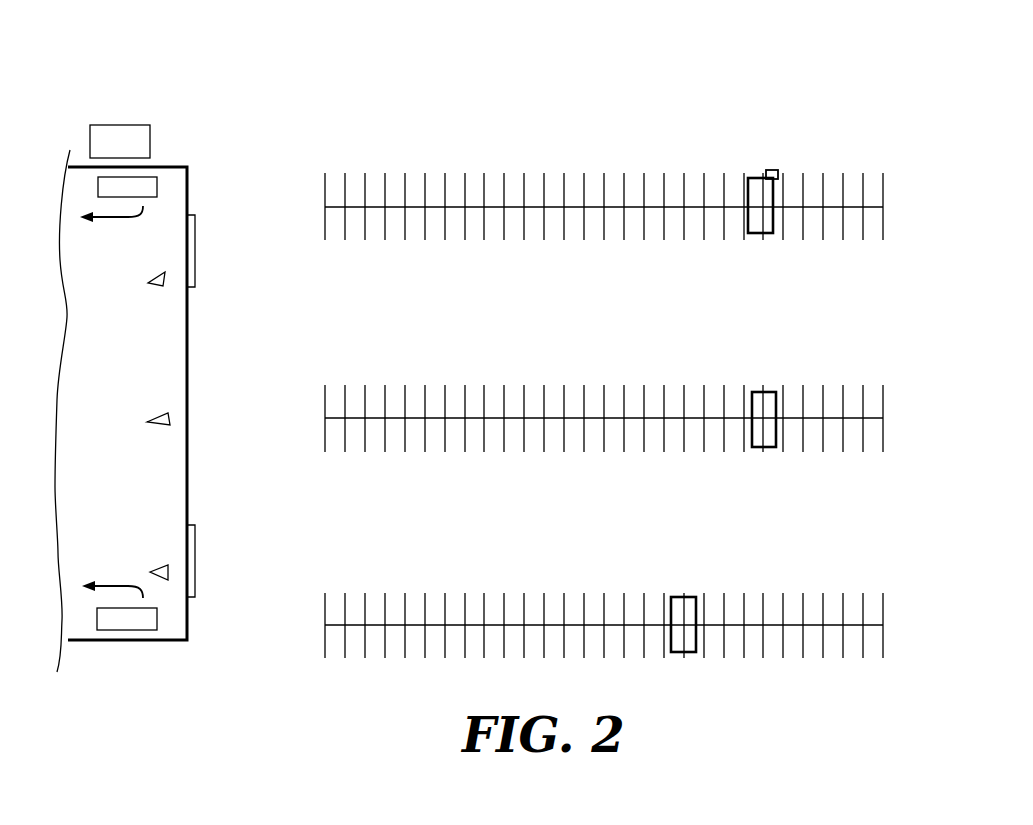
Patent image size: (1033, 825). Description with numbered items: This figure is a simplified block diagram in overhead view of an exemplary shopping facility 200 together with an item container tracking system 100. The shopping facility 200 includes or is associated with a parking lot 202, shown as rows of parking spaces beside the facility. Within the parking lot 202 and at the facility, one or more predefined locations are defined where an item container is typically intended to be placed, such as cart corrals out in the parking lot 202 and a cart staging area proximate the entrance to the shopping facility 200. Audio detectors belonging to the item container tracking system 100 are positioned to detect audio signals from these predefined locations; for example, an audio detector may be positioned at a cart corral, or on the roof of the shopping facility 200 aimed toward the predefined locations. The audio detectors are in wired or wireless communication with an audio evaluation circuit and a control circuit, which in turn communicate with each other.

The item container tracking system 100 is at (103, 87).
The shopping facility 200 is at (172, 694).
The parking lot 202 is at (796, 86).